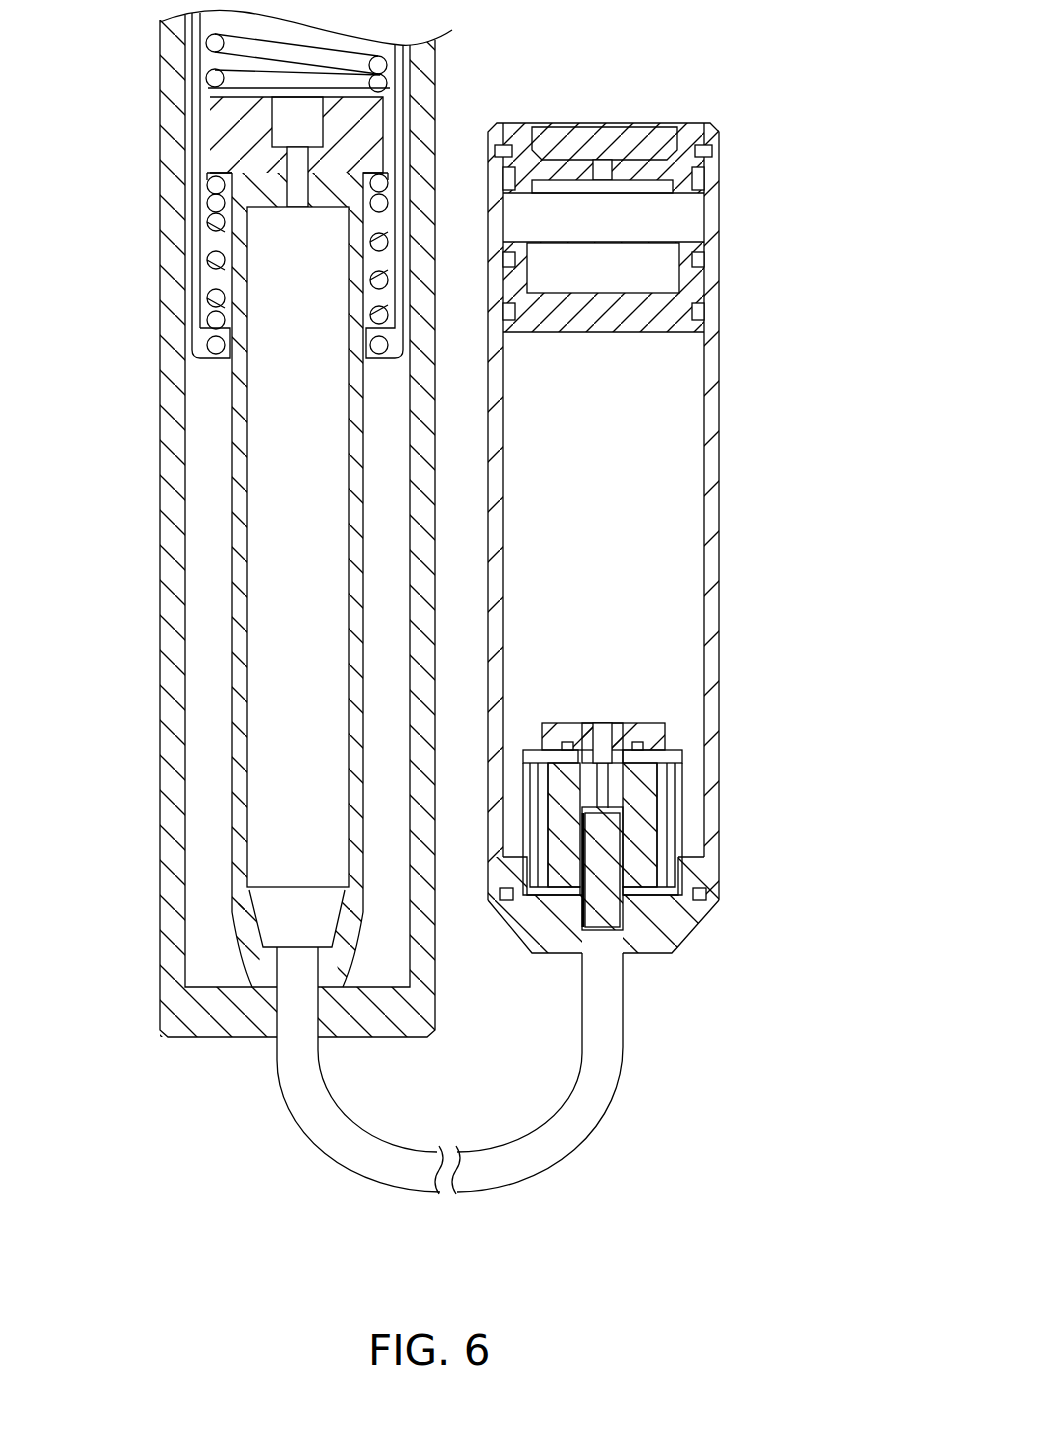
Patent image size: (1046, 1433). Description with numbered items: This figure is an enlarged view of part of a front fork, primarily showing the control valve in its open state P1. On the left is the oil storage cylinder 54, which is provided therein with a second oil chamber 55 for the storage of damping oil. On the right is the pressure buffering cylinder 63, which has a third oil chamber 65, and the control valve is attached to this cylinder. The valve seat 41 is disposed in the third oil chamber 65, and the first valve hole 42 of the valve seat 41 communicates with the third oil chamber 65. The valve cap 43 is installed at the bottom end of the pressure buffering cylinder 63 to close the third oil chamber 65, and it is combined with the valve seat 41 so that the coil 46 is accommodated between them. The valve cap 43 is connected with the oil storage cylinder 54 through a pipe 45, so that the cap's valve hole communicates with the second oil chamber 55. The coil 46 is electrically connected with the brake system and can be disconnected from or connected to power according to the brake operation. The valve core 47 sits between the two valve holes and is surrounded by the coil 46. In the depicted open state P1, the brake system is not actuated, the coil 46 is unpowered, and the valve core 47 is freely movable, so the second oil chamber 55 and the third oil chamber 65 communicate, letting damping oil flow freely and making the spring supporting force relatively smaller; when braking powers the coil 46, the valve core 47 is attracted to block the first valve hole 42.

The valve seat 41 is at (675, 765).
The first valve hole 42 is at (605, 733).
The valve cap 43 is at (680, 922).
The pipe 45 is at (603, 1103).
The coil 46 is at (647, 790).
The valve core 47 is at (612, 828).
The open state P1 is at (648, 866).
The oil storage cylinder 54 is at (237, 673).
The second oil chamber 55 is at (262, 740).
The pressure buffering cylinder 63 is at (659, 487).
The third oil chamber 65 is at (663, 488).